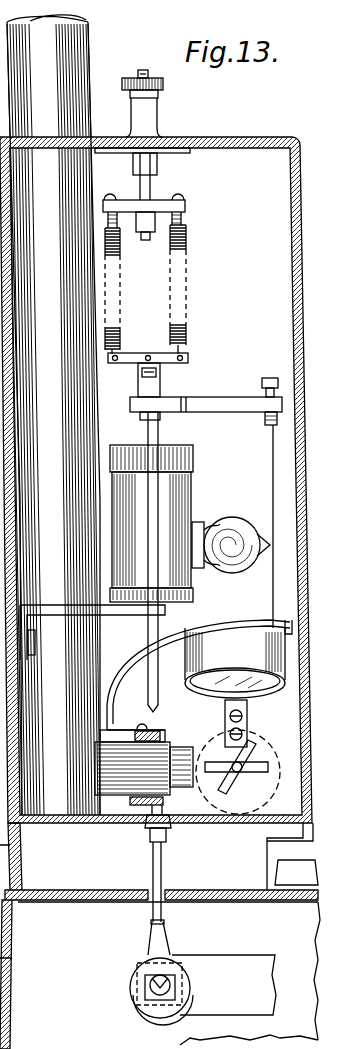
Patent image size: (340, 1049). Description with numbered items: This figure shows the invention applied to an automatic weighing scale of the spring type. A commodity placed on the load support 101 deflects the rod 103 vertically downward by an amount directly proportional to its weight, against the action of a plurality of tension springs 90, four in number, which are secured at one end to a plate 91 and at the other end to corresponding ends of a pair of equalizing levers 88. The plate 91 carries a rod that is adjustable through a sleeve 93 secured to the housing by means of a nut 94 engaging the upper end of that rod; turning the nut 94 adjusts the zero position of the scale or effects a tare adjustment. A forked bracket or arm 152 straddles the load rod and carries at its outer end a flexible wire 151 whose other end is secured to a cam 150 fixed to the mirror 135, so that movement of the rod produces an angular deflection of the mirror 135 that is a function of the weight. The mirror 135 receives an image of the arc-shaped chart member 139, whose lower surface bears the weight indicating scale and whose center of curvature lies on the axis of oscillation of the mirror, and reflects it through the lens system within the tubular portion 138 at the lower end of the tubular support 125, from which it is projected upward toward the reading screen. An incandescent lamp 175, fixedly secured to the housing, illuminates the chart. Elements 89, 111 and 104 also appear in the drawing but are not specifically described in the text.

The support tube 125 is at (84, 52).
The nut 94 is at (164, 83).
The sleeve 93 is at (152, 125).
The plate 91 is at (158, 200).
The tension springs 90 is at (120, 252).
The opening 89 is at (149, 355).
The equalizing levers 88 is at (126, 364).
The forked bracket or arm 152 is at (216, 393).
The flexible wire 151 is at (271, 465).
The incandescent lamp 175 is at (238, 521).
The arc-shaped chart member 139 is at (206, 622).
The fan blade 111 is at (235, 767).
The mirror 135 is at (222, 774).
The tubular portion 138 is at (118, 797).
The cam 150 is at (221, 803).
The load support 101 is at (276, 876).
The rod 103 is at (155, 908).
The coupling 104 is at (136, 991).